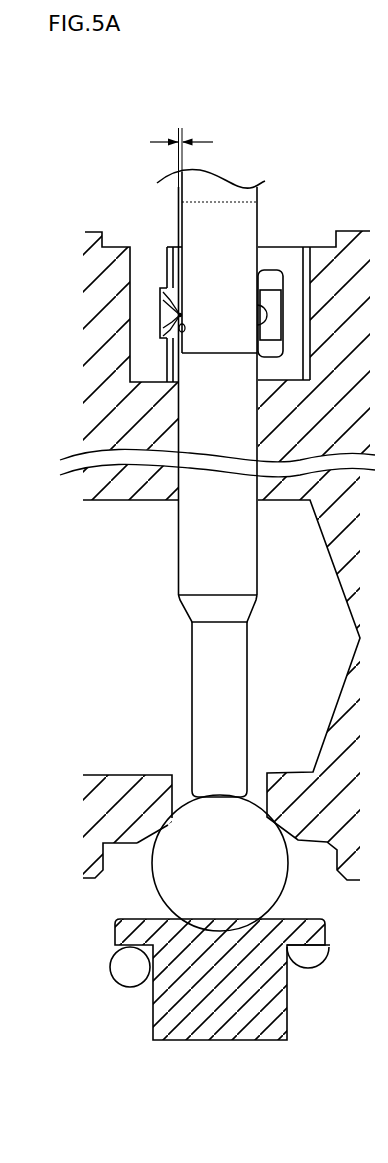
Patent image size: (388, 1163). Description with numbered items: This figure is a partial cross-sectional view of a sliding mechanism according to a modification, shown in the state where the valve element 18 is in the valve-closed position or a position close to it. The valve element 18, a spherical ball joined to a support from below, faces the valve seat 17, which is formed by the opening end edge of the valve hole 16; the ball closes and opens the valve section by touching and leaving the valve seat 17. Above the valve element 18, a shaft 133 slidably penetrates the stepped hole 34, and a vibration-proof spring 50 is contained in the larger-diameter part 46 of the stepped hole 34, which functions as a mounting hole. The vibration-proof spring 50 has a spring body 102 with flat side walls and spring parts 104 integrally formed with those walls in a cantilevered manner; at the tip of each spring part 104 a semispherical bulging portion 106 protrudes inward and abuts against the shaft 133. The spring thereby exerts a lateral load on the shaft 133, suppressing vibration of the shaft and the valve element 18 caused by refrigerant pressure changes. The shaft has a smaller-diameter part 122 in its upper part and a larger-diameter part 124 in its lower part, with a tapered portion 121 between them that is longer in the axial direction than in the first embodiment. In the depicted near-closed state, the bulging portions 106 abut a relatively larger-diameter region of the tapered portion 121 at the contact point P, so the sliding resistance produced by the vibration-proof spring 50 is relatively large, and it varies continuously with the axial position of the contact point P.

The valve hole 16 is at (172, 784).
The valve seat 17 is at (157, 828).
The valve element 18 is at (153, 840).
The stepped hole 34 is at (101, 366).
The larger-diameter part 46 is at (137, 270).
The vibration-proof spring 50 is at (279, 236).
The spring body 102 is at (167, 262).
The spring part 104 is at (160, 315).
The bulging portion 106 is at (182, 340).
The tapered portion 121 is at (260, 273).
The smaller-diameter part 122 is at (258, 198).
The larger-diameter part 124 is at (182, 402).
The shaft 133 is at (165, 555).
The contact point P is at (180, 315).